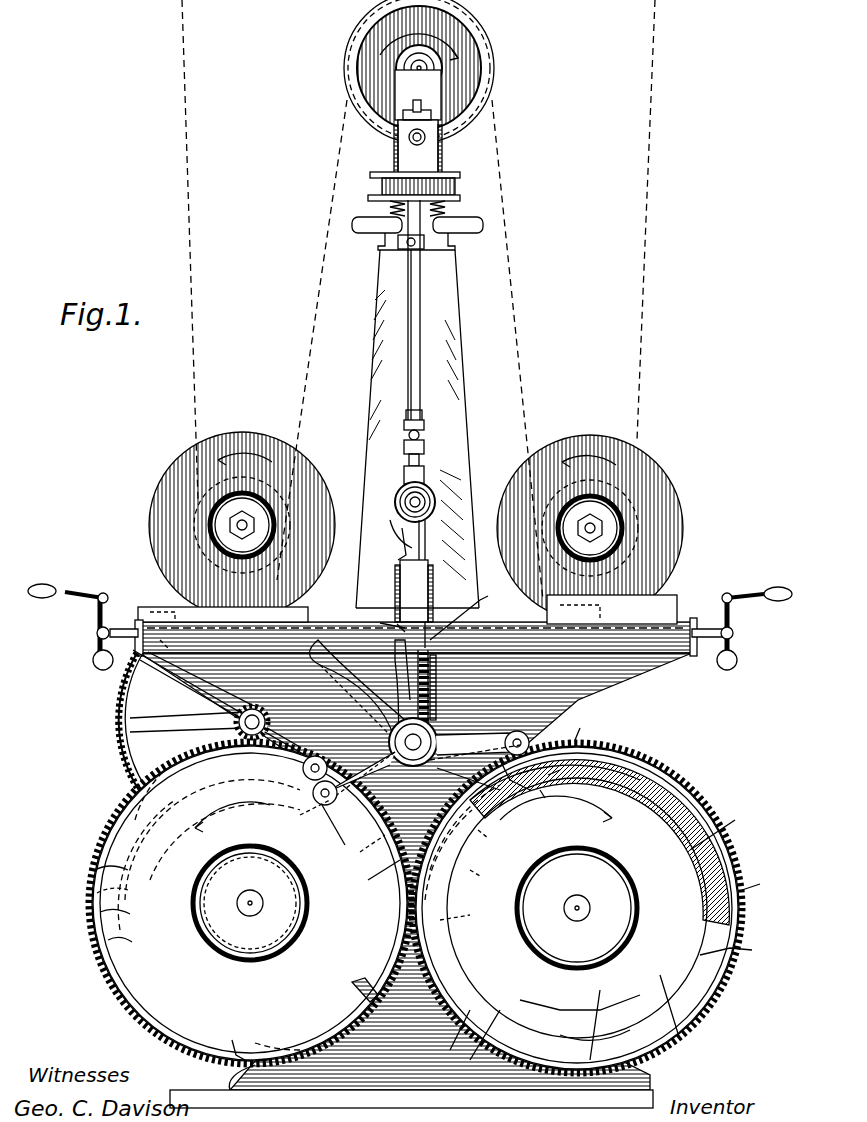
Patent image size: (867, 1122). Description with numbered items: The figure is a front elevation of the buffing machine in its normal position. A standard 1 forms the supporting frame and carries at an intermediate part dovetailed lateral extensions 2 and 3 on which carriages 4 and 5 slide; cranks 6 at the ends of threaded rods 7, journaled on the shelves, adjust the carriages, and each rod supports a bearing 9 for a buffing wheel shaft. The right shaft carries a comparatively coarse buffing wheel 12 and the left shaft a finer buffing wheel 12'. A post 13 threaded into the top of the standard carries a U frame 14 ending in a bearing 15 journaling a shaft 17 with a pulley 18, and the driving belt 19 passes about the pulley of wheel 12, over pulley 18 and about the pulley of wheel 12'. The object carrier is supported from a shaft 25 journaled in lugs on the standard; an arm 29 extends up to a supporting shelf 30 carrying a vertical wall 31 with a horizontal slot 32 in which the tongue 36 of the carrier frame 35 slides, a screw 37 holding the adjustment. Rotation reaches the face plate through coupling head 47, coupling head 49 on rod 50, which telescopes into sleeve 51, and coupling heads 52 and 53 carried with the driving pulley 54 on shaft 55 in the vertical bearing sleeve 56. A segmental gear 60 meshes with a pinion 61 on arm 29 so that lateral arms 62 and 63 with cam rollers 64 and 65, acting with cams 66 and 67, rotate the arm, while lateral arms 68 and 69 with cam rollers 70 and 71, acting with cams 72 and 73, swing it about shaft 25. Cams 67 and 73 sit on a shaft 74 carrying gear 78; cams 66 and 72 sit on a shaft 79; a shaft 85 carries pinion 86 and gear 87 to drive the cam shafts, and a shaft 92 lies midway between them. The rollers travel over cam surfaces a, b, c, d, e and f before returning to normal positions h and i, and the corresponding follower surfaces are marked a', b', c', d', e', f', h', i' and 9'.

The standard 1 is at (376, 352).
The dovetailed lateral extension 2 is at (195, 660).
The dovetailed lateral extension 3 is at (630, 660).
The carriage 4 is at (150, 604).
The carriage 5 is at (672, 590).
The crank 6 is at (728, 632).
The threaded rod 7 is at (690, 610).
The bearing 9 is at (217, 819).
The coarse buffing wheel 12 is at (602, 528).
The finer buffing wheel 12' is at (242, 508).
The post 13 is at (447, 210).
The U frame 14 is at (438, 100).
The bearing 15 is at (395, 62).
The shaft 17 is at (427, 68).
The pulley 18 is at (488, 45).
The driving belt 19 is at (666, 76).
The shaft 25 is at (420, 736).
The arm 29 is at (432, 690).
The supporting shelf 30 is at (438, 700).
The vertical wall 31 is at (428, 530).
The horizontal slot 32 is at (400, 580).
The carrier frame 35 is at (425, 468).
The tongue 36 is at (396, 498).
The screw 37 is at (400, 552).
The coupling head 47 is at (404, 446).
The coupling head 49 is at (425, 428).
The rod 50 is at (404, 402).
The sleeve 51 is at (422, 333).
The coupling head 52 is at (422, 268).
The coupling head 53 is at (450, 240).
The driving pulley 54 is at (382, 185).
The shaft 55 is at (412, 106).
The vertical bearing sleeve 56 is at (436, 160).
The segmental gear 60 is at (466, 612).
The pinion 61 is at (379, 620).
The lateral arm 62 is at (375, 790).
The lateral arm 63 is at (488, 720).
The cam roller 64 is at (335, 828).
The cam roller 65 is at (528, 740).
The cam 66 is at (290, 1036).
The cam 67 is at (580, 1007).
The lateral arm 68 is at (360, 740).
The lateral arm 69 is at (440, 776).
The cam roller 70 is at (300, 776).
The cam roller 71 is at (517, 786).
The cam 72 is at (352, 985).
The cam 73 is at (648, 778).
The shaft 74 is at (585, 902).
The gear 78 is at (598, 755).
The shaft 79 is at (252, 910).
The shaft 85 is at (240, 724).
The pinion 86 is at (240, 708).
The gear 87 is at (124, 730).
The shaft 92 is at (466, 909).
The cam surface a is at (366, 853).
The follower surface a' is at (490, 843).
The cam surface b is at (375, 877).
The follower surface b' is at (482, 877).
The cam surface c is at (237, 1049).
The follower surface c' is at (595, 1042).
The cam surface d is at (757, 881).
The follower surface d' is at (134, 911).
The cam surface e is at (731, 946).
The follower surface e' is at (138, 940).
The cam surface f is at (127, 879).
The follower surface f' is at (724, 827).
The normal position h is at (315, 818).
The follower surface h' is at (584, 725).
The normal position i is at (307, 795).
The follower surface i' is at (560, 769).
The cam path 9' is at (552, 801).